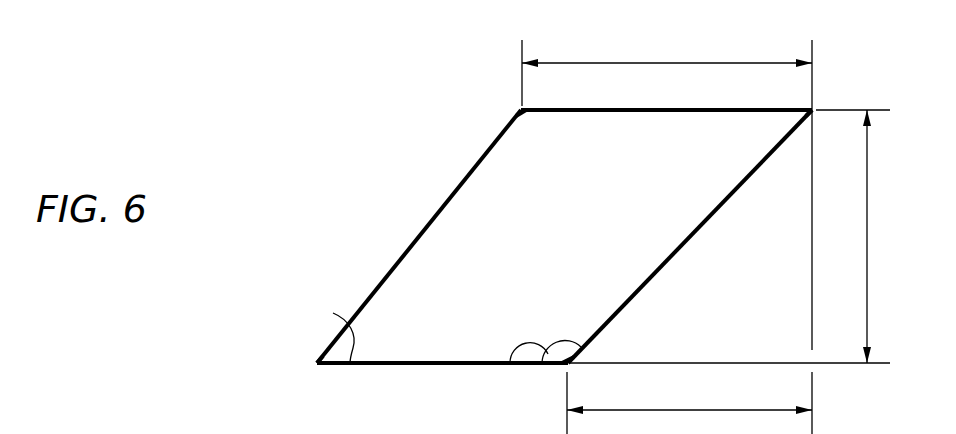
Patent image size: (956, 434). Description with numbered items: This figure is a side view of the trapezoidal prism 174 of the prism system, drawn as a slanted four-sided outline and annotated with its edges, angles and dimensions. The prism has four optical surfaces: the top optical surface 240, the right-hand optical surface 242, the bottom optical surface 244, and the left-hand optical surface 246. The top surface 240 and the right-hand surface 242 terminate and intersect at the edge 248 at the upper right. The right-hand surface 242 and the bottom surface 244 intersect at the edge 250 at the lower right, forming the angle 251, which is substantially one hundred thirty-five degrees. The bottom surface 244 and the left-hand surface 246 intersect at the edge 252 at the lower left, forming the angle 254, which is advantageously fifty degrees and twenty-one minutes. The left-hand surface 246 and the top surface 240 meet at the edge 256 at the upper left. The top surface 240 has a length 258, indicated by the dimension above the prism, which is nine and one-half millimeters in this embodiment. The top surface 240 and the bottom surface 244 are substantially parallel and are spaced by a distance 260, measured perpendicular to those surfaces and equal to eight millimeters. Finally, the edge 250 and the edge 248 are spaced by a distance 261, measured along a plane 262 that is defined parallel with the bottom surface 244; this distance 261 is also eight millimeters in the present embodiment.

The trapezoidal prism 174 is at (318, 121).
The optical surface S6 240 is at (699, 110).
The optical surface S7 242 is at (725, 202).
The optical surface S8 244 is at (397, 365).
The optical surface S9 246 is at (443, 207).
The edge 248 is at (812, 110).
The edge 250 is at (570, 365).
The angle 251 is at (512, 364).
The edge 252 is at (318, 364).
The angle 254 is at (322, 324).
The edge 256 is at (519, 110).
The length 258 is at (641, 62).
The distance 260 is at (867, 210).
The distance 261 is at (753, 410).
The plane 262 is at (773, 362).